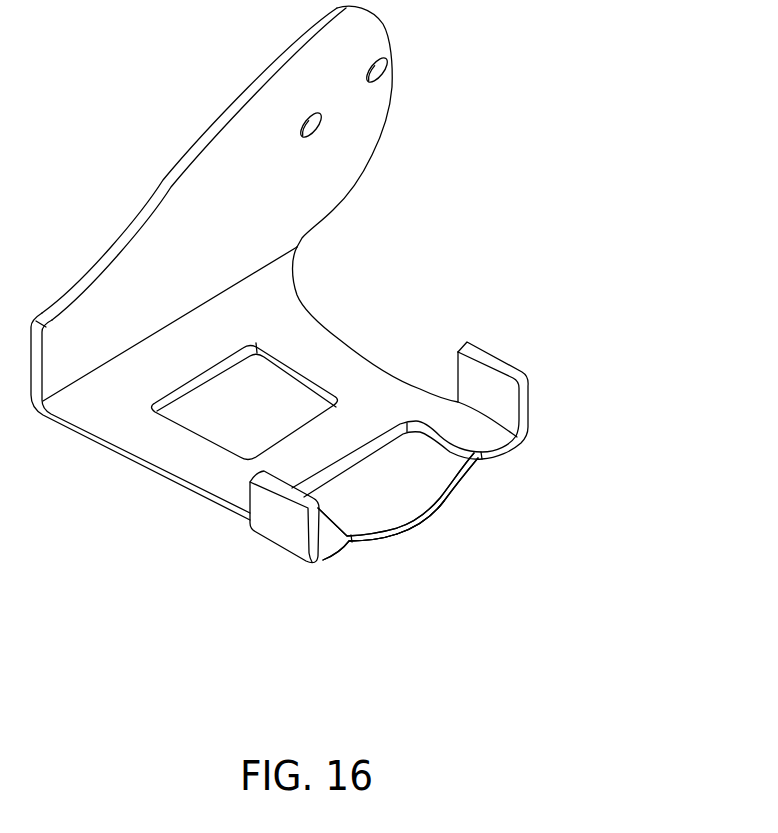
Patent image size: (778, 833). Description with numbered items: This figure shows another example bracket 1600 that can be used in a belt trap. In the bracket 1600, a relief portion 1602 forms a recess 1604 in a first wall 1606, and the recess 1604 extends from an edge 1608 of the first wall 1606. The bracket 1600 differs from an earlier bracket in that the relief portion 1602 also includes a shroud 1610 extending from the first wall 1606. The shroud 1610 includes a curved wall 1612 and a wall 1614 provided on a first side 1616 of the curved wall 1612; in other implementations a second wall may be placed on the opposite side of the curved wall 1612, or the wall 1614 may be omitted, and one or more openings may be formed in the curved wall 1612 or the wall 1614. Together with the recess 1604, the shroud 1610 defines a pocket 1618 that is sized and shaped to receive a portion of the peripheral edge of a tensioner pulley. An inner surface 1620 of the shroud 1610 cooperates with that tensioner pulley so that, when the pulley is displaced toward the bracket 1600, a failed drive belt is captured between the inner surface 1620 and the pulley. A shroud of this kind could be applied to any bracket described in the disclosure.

The bracket 1600 is at (348, 350).
The relief portion 1602 is at (440, 443).
The recess 1604 is at (494, 509).
The first wall 1606 is at (320, 318).
The edge 1608 is at (337, 550).
The shroud 1610 is at (393, 541).
The curved wall 1612 is at (422, 523).
The wall 1614 is at (353, 495).
The first side 1616 is at (435, 451).
The pocket 1618 is at (423, 480).
The inner surface 1620 is at (377, 517).